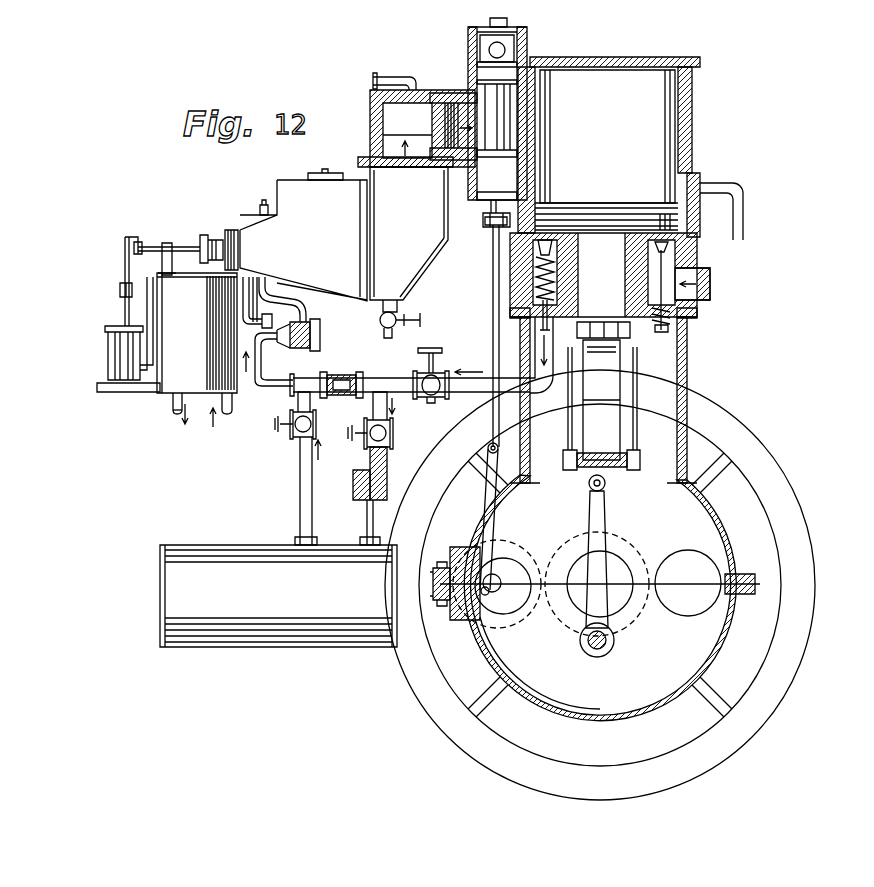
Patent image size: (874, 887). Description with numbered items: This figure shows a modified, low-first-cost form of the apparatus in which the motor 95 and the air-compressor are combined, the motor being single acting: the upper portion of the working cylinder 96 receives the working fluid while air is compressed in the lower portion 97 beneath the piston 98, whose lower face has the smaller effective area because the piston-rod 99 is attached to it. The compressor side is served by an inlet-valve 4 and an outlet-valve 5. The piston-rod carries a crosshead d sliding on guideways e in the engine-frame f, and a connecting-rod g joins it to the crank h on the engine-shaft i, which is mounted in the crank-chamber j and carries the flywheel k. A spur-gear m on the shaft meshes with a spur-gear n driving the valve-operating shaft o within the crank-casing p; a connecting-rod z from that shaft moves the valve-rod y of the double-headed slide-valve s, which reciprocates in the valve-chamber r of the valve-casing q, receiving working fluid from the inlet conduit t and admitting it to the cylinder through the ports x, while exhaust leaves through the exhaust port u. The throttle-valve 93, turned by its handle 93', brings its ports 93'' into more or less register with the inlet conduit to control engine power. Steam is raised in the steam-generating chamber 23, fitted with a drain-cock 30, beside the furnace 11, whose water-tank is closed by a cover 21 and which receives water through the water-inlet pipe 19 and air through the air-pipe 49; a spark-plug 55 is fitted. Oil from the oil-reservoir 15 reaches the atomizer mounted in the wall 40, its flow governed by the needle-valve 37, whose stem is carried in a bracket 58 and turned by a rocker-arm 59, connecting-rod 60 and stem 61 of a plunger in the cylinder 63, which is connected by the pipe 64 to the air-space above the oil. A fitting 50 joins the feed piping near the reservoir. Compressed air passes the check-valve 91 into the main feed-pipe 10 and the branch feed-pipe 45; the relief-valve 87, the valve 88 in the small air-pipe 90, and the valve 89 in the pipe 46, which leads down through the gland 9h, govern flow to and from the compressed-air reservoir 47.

The flywheel k is at (803, 565).
The crank-casing p is at (603, 712).
The crank h is at (600, 597).
The crank-chamber j is at (597, 609).
The spur-gear n is at (468, 628).
The spur-gear m is at (567, 630).
The engine-shaft i is at (628, 576).
The engine-valve operating shaft o is at (502, 576).
The connecting-rod g is at (602, 517).
The connecting-rod z is at (489, 483).
The valve-stem or valve-rod y is at (493, 283).
The engine-frame f is at (687, 380).
The guideways e is at (637, 352).
The crosshead d is at (640, 463).
The piston-rod 99 is at (600, 427).
The inlet-valve 4 is at (710, 297).
The outlet-valve 5 is at (512, 257).
The motor 95 is at (694, 120).
The working cylinder 96 is at (607, 136).
The lower portion of cylinder 97 is at (537, 213).
The piston 98 is at (633, 207).
The valve-casing q is at (468, 43).
The exhaust port u is at (500, 50).
The port x is at (536, 47).
The slide-valve s is at (500, 100).
The valve-chamber r is at (510, 117).
The ports 93'' is at (434, 147).
The inlet conduit t is at (370, 120).
The throttle-valve 93 is at (407, 136).
The handle 93' is at (394, 70).
The steam-generating chamber 23 is at (409, 233).
The air-pipe 49 is at (389, 288).
The drain-cock 30 is at (418, 320).
The furnace 11 is at (303, 240).
The cover 21 is at (287, 177).
The spark-plug 55 is at (268, 215).
The wall 40 is at (232, 230).
The needle-valve 37 is at (183, 247).
The bracket 58 is at (168, 243).
The rocker-arm 59 is at (137, 242).
The connecting-rod 60 is at (125, 265).
The stem 61 is at (120, 305).
The cylinder 63 is at (110, 354).
The pipe 64 is at (160, 313).
The oil-reservoir 15 is at (230, 425).
The branch feed-pipe 45 is at (247, 277).
The water-inlet pipe 19 is at (281, 296).
The fitting 50 is at (320, 336).
The main compressed-air feed-pipe 10 is at (268, 359).
The small air-pipe 90 is at (382, 389).
The check-valve 91 is at (350, 397).
The relief-valve 87 is at (433, 377).
The valve 89 is at (292, 431).
The air-pipe 46 is at (300, 485).
The valve 88 is at (388, 432).
The pipe gland 9h is at (362, 498).
The compressed-air reservoir 47 is at (278, 596).